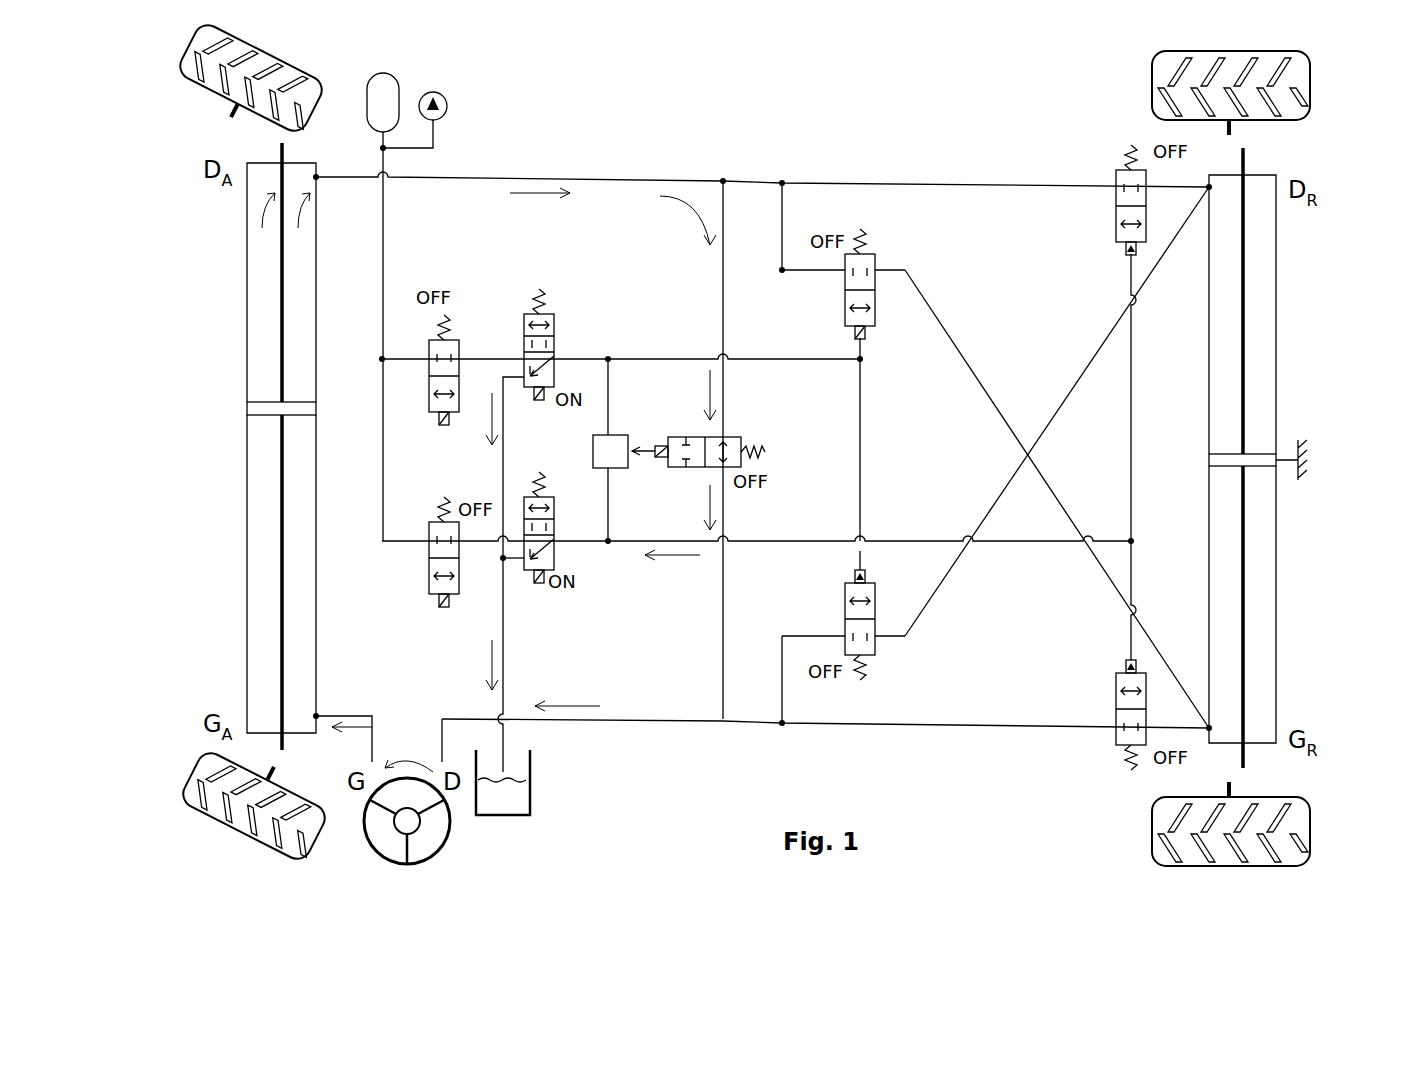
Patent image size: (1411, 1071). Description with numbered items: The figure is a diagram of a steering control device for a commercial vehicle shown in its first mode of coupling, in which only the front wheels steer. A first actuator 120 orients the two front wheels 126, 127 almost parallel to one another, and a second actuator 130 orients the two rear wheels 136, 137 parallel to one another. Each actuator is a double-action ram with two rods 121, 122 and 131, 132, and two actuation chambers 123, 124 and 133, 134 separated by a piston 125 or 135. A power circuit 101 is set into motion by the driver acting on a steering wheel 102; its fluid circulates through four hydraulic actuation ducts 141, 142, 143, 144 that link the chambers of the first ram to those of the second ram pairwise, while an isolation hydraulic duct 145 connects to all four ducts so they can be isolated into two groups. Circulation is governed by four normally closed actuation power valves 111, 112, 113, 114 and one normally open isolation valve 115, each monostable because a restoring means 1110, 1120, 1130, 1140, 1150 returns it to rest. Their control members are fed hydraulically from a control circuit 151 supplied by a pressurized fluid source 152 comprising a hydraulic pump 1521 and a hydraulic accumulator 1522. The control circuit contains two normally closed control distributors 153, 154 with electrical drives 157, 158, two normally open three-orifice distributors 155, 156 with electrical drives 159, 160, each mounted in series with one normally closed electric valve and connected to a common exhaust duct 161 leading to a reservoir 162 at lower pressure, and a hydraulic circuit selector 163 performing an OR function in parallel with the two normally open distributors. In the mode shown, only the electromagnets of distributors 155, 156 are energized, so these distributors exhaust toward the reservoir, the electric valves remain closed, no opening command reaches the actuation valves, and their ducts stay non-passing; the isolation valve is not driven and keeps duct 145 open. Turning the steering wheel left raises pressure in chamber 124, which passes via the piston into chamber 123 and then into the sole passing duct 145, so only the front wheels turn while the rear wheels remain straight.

The power circuit 101 is at (887, 167).
The steering wheel 102 is at (431, 838).
The normally closed power valve 111 is at (1116, 680).
The normally closed power valve 112 is at (845, 588).
The normally closed power valve 113 is at (845, 283).
The normally closed power valve 114 is at (1116, 190).
The normally open isolation valve 115 is at (733, 437).
The restoring means 1110 is at (1131, 772).
The restoring means 1120 is at (868, 676).
The restoring means 1130 is at (866, 240).
The restoring means 1140 is at (1128, 150).
The restoring means 1150 is at (766, 452).
The first actuator 120 is at (330, 598).
The rod 121 is at (281, 237).
The rod 122 is at (280, 628).
The actuation chamber 123 is at (293, 292).
The actuation chamber 124 is at (318, 680).
The piston 125 is at (266, 402).
The front wheel 126 is at (207, 82).
The front wheel 127 is at (203, 758).
The second actuator 130 is at (1200, 492).
The rod 131 is at (1246, 248).
The rod 132 is at (1246, 567).
The actuation chamber 133 is at (1265, 297).
The actuation chamber 134 is at (1265, 627).
The piston 135 is at (1258, 452).
The rear wheel 136 is at (1304, 97).
The rear wheel 137 is at (1310, 828).
The hydraulic actuation duct 141 is at (980, 721).
The hydraulic actuation duct 142 is at (1015, 471).
The hydraulic actuation duct 143 is at (935, 312).
The hydraulic actuation duct 144 is at (1005, 188).
The isolation hydraulic duct 145 is at (725, 320).
The control circuit 151 is at (460, 270).
The pressurized fluid source 152 is at (390, 176).
The hydraulic pump 1521 is at (447, 104).
The hydraulic accumulator 1522 is at (385, 80).
The normally closed monostable control distributor 153 is at (460, 348).
The normally closed monostable control distributor 154 is at (429, 583).
The normally open monostable control distributor 155 is at (556, 330).
The normally open monostable control distributor 156 is at (556, 560).
The electrical drive 157 is at (444, 422).
The electrical drive 158 is at (447, 608).
The electrical drive 159 is at (541, 401).
The electrical drive 160 is at (540, 584).
The exhaust duct 161 is at (505, 664).
The reservoir 162 is at (531, 806).
The hydraulic circuit selector 163 is at (620, 469).